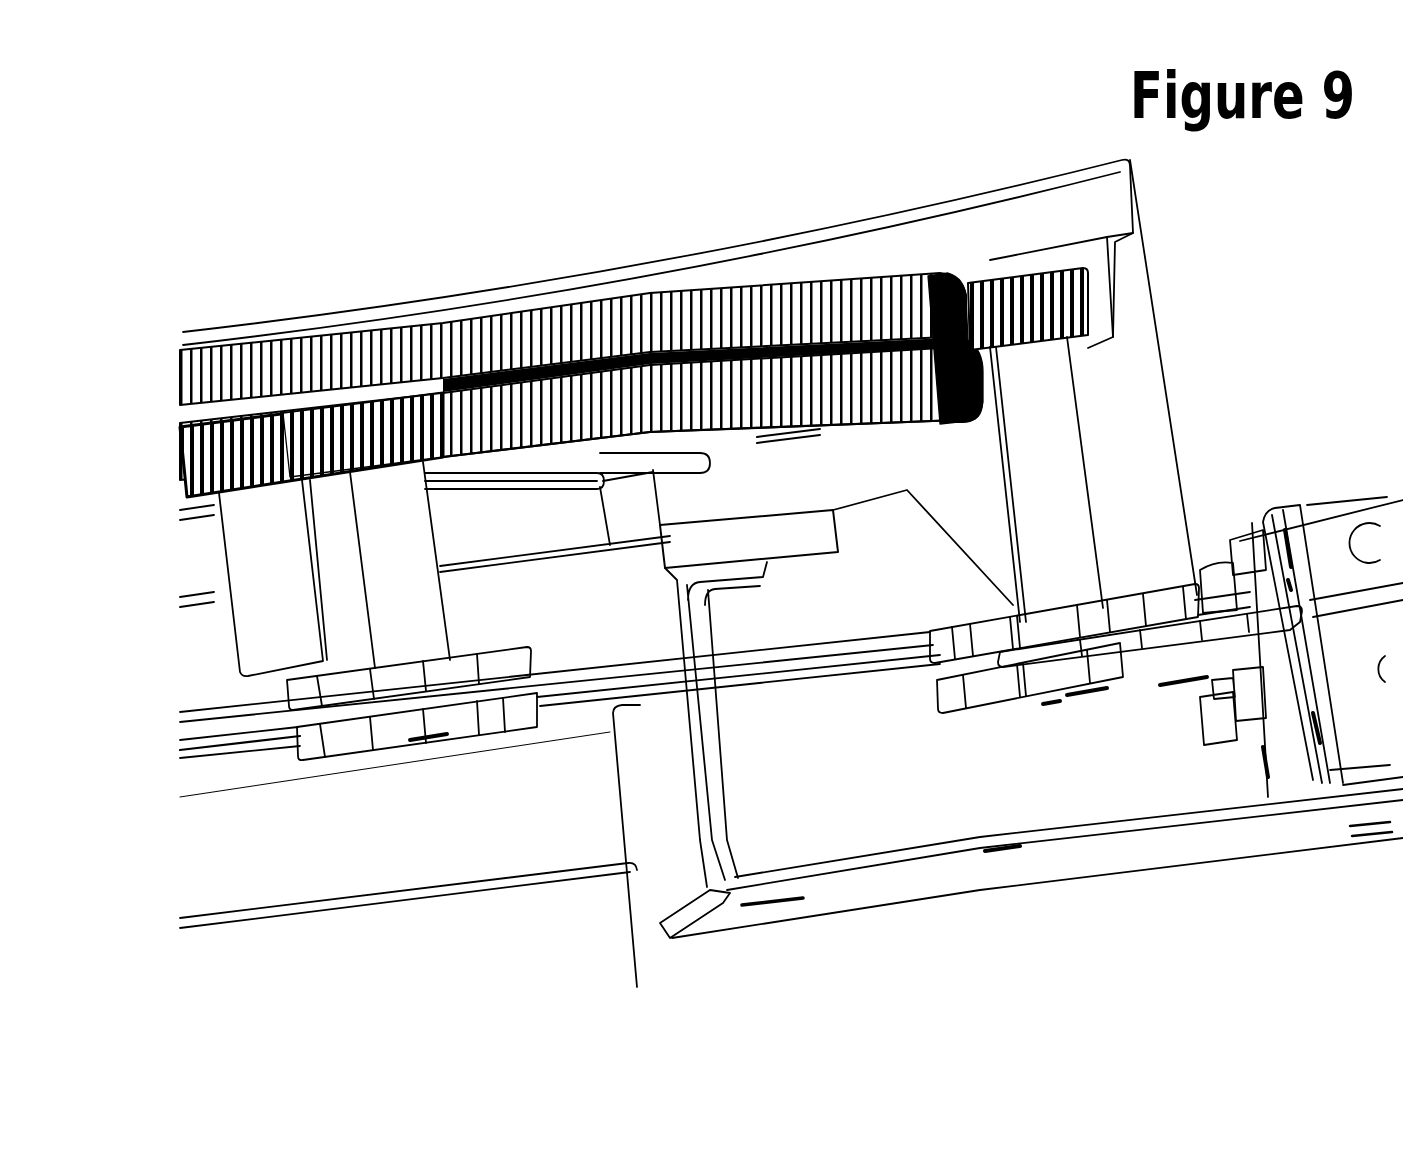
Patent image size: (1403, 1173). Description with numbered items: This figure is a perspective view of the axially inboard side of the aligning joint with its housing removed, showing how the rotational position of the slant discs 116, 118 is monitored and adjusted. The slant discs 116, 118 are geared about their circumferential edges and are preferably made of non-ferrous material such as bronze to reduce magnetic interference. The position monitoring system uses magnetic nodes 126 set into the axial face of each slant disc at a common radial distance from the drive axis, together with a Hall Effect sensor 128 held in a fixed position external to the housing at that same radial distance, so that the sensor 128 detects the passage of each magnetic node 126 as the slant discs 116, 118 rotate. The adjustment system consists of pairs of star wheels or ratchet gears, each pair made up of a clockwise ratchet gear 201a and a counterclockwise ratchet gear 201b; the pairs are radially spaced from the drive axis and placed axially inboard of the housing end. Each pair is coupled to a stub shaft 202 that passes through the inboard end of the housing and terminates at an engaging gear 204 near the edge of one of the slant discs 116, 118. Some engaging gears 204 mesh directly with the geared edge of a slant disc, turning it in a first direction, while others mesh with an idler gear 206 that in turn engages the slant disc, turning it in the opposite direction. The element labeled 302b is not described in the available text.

The slant disc 116 is at (855, 427).
The slant disc 118 is at (823, 268).
The magnetic node 126 is at (763, 450).
The Hall Effect sensor 128 is at (780, 530).
The clockwise star wheel or ratchet gear 201a is at (352, 740).
The counterclockwise star wheel or ratchet gear 201b is at (501, 660).
The stub shaft 202 is at (379, 590).
The engaging gear 204 is at (410, 412).
The idler gear 206 is at (265, 437).
The bearing ring 302b is at (1167, 637).